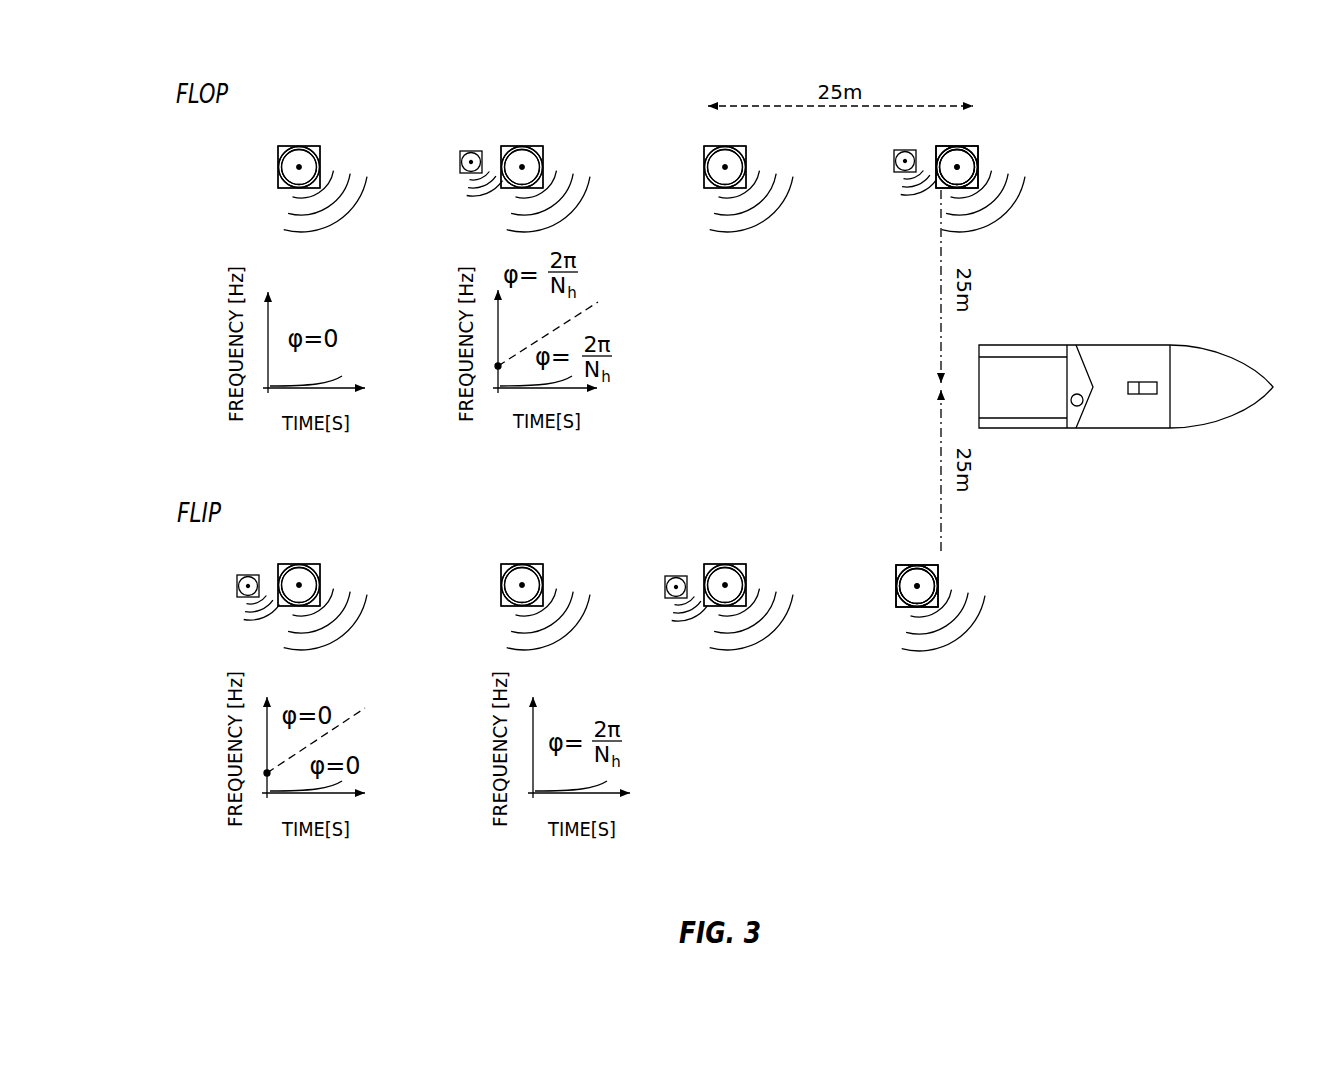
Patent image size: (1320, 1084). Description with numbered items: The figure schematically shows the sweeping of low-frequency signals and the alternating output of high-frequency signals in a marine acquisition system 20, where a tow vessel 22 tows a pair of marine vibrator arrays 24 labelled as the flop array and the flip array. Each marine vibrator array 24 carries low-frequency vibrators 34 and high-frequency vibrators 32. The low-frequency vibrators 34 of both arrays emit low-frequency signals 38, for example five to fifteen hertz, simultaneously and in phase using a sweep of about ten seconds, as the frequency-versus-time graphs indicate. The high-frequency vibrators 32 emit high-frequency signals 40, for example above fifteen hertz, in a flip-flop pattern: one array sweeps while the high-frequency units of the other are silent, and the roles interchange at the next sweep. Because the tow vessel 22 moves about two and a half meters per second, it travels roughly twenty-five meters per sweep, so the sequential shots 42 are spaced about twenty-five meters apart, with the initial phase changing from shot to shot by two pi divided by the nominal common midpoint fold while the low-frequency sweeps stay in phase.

The marine acquisition system 20 is at (1175, 178).
The tow vessel 22 is at (1112, 434).
The marine vibrator array 24 is at (1067, 178).
The high-frequency vibrator 32 is at (459, 160).
The low-frequency vibrator 34 is at (299, 146).
The low-frequency signal 38 is at (337, 212).
The high-frequency signal 40 is at (492, 190).
The sequential shot 42 is at (326, 144).